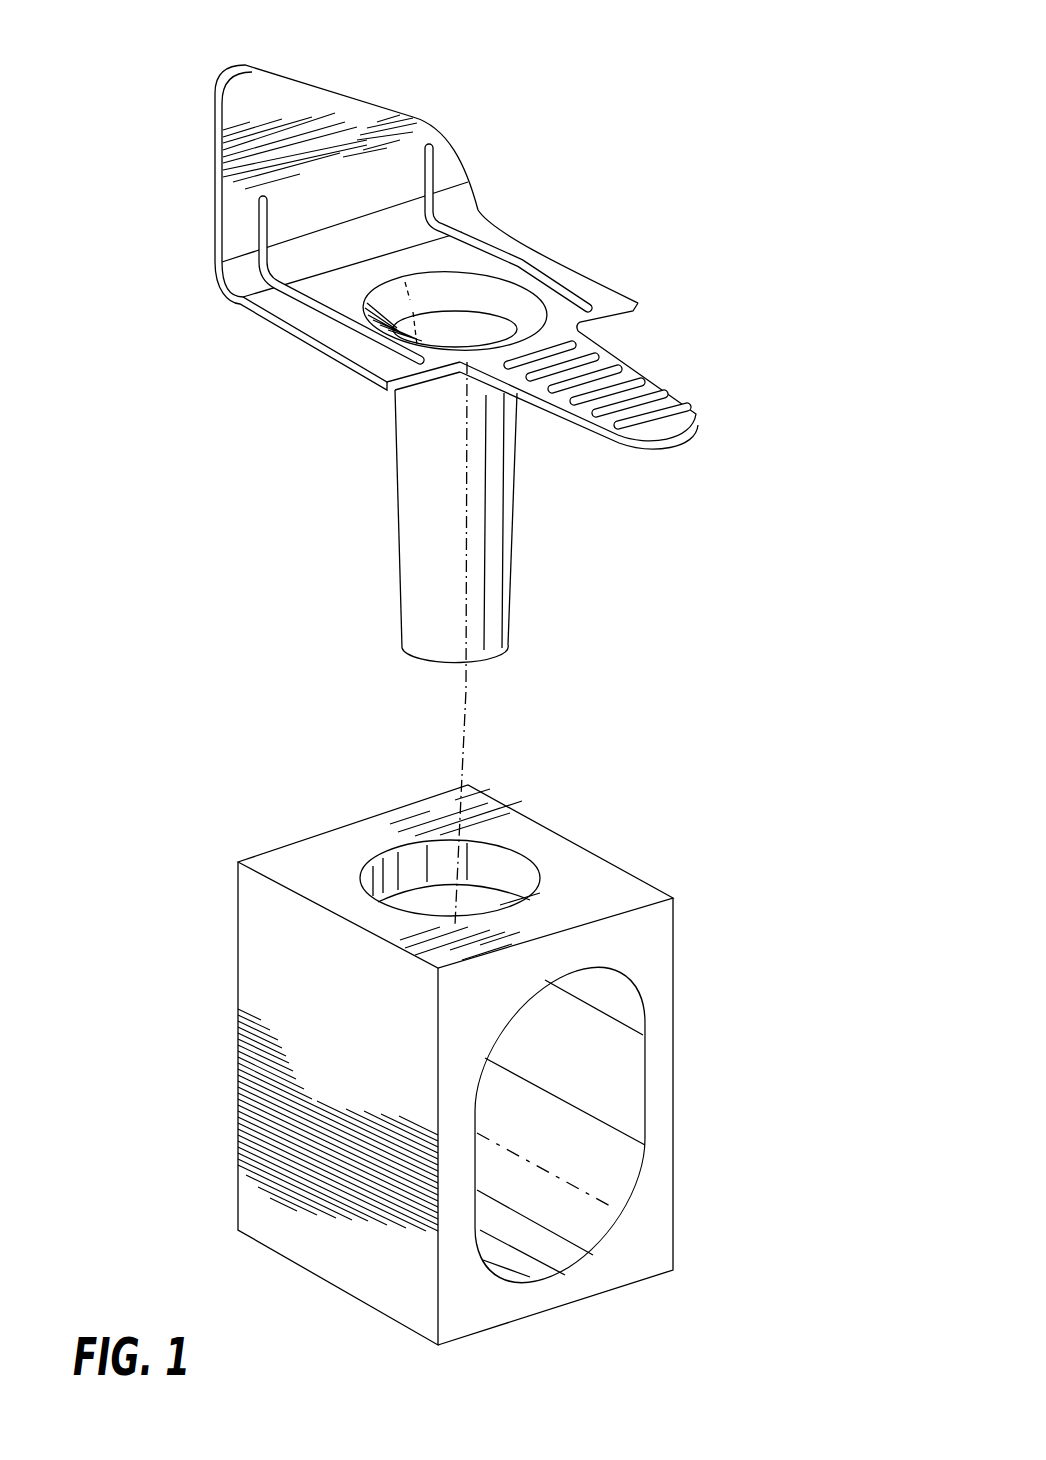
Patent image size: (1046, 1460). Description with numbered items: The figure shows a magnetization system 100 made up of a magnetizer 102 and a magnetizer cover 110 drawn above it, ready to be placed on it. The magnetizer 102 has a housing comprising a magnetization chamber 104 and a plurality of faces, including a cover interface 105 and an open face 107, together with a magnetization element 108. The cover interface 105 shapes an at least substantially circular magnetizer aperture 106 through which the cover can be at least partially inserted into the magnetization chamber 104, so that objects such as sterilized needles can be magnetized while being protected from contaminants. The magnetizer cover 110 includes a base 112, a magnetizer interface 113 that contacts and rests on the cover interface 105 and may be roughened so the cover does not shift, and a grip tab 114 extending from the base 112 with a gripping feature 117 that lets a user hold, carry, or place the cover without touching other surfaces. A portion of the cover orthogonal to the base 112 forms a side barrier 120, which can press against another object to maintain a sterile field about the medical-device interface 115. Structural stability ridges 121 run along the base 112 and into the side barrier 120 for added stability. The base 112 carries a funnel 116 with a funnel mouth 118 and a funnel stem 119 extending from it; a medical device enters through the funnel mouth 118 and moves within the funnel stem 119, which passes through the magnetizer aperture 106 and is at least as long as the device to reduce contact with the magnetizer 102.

The magnetization system 100 is at (790, 212).
The magnetizer 102 is at (200, 1052).
The magnetization chamber 104 is at (550, 1135).
The cover interface 105 is at (598, 885).
The magnetizer aperture 106 is at (508, 854).
The open face 107 is at (625, 1263).
The magnetization element 108 is at (305, 995).
The magnetizer cover 110 is at (184, 381).
The base 112 is at (258, 318).
The magnetizer interface 113 is at (640, 305).
The grip tab 114 is at (697, 422).
The medical-device interface 115 is at (498, 240).
The funnel 116 is at (458, 290).
The gripping feature 117 is at (628, 384).
The funnel mouth 118 is at (520, 310).
The funnel stem 119 is at (425, 547).
The side barrier 120 is at (345, 118).
The structural stability ridges 121 is at (333, 315).